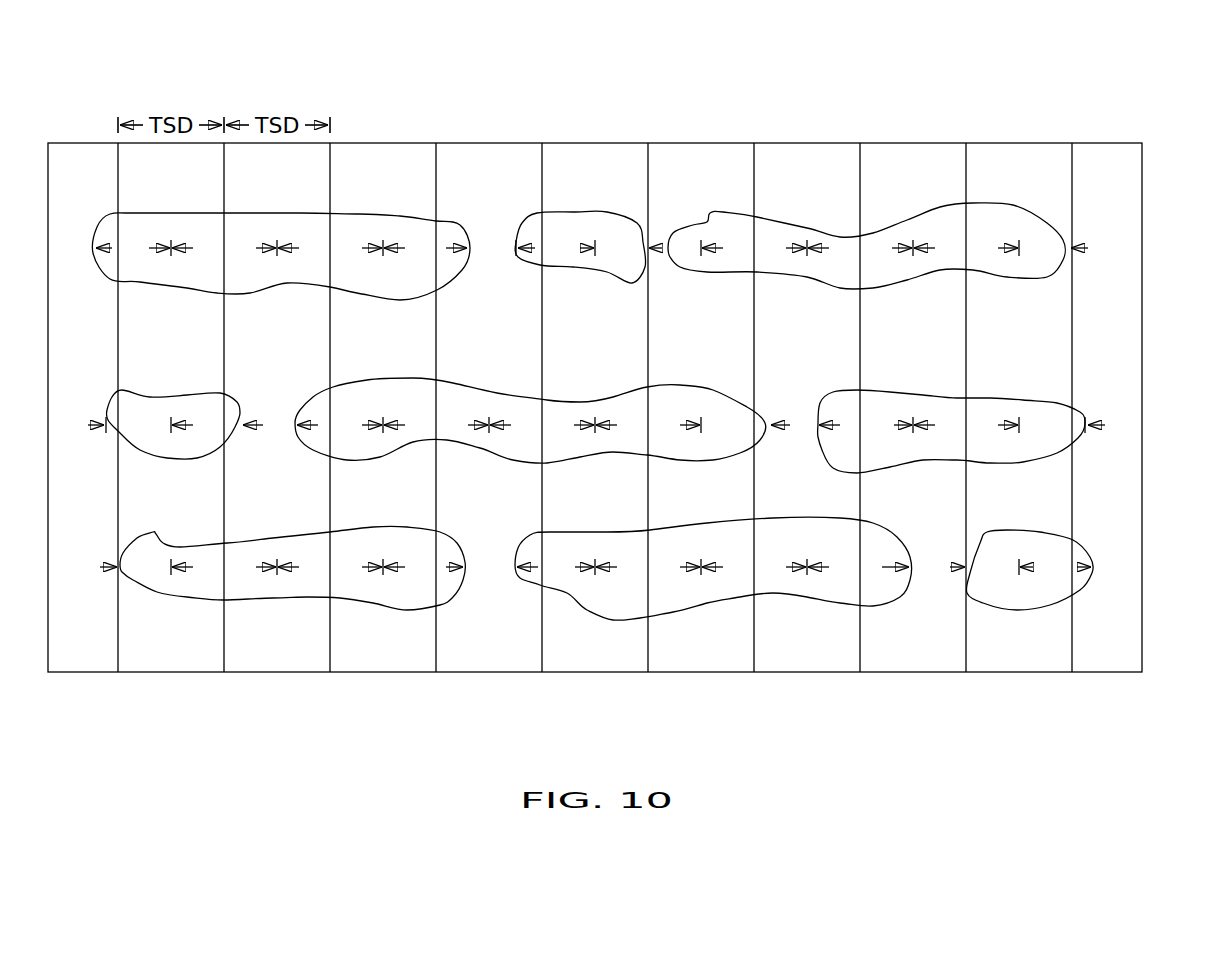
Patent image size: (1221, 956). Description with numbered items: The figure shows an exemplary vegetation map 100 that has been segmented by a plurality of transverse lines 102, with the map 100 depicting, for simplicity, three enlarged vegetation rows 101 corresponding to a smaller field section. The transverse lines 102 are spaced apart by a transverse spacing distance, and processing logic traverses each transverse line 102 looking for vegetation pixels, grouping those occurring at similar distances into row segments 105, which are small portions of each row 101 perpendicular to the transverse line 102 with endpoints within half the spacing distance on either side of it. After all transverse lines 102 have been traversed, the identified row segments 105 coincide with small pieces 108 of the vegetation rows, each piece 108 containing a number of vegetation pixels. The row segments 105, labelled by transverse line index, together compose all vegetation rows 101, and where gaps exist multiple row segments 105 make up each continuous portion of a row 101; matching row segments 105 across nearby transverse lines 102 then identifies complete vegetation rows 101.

The vegetation map 100 is at (1107, 96).
The vegetation row 101 is at (1121, 248).
The transverse line 102 is at (120, 663).
The row segment 105 is at (596, 409).
The piece of vegetation row 108 is at (137, 213).